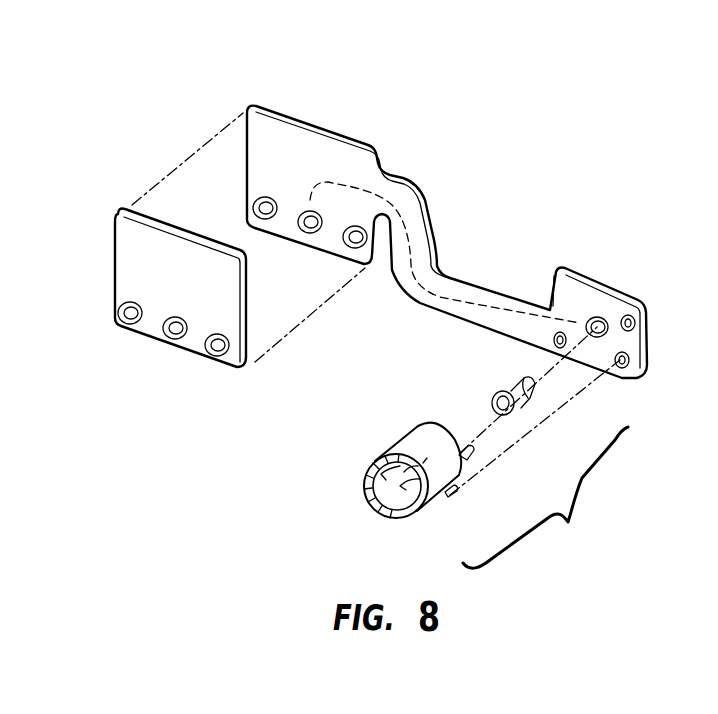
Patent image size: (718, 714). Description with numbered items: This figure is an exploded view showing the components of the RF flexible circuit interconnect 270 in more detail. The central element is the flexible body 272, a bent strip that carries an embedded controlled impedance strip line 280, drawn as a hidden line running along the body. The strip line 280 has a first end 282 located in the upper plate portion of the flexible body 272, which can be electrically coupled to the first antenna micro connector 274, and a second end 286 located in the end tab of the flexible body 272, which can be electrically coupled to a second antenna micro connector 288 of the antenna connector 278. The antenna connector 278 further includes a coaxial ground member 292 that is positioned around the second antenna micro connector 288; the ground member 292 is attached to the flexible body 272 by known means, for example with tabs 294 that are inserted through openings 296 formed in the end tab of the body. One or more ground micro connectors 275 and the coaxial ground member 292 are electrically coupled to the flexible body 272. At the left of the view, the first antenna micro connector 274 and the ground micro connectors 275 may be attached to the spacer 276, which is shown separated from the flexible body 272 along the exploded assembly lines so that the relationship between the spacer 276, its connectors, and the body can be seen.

The interconnect 270 is at (535, 150).
The flexible body 272 is at (402, 173).
The first antenna micro connector 274 is at (176, 342).
The ground micro connectors 275 is at (125, 335).
The spacer 276 is at (148, 292).
The antenna connector 278 is at (545, 498).
The controlled impedance strip line 280 is at (447, 300).
The first end 282 is at (308, 210).
The second end 286 is at (593, 315).
The second antenna micro connector 288 is at (528, 398).
The coaxial ground member 292 is at (430, 505).
The tabs 294 is at (467, 487).
The openings 296 is at (638, 382).